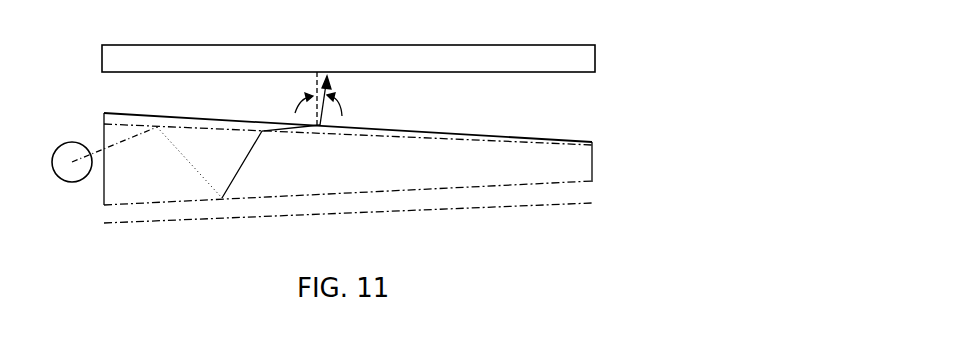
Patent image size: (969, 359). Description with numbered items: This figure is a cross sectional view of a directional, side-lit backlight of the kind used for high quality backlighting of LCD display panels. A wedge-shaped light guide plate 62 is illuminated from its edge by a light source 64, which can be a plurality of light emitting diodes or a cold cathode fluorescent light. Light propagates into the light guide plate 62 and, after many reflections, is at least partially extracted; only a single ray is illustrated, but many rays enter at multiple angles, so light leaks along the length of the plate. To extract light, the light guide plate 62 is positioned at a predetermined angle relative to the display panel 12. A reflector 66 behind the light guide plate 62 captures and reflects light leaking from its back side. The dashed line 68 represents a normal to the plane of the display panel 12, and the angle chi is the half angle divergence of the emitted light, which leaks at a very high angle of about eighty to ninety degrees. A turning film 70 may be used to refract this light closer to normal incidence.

The display panel 12 is at (582, 45).
The light guide plate 62 is at (596, 168).
The light source 64 is at (73, 141).
The reflector 66 is at (115, 225).
The dashed line 68 is at (315, 78).
The turning film 70 is at (496, 131).